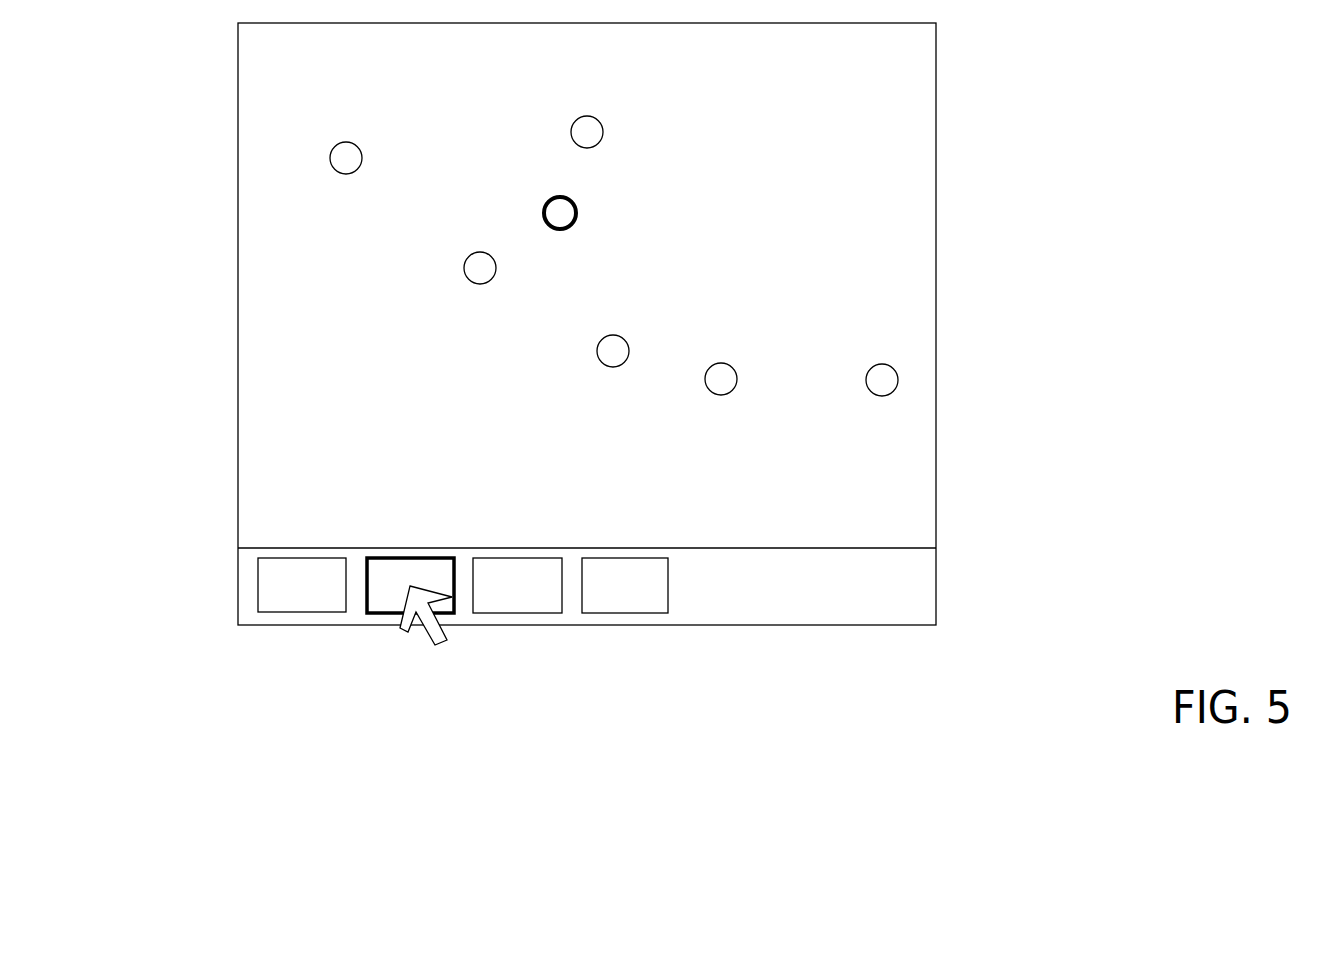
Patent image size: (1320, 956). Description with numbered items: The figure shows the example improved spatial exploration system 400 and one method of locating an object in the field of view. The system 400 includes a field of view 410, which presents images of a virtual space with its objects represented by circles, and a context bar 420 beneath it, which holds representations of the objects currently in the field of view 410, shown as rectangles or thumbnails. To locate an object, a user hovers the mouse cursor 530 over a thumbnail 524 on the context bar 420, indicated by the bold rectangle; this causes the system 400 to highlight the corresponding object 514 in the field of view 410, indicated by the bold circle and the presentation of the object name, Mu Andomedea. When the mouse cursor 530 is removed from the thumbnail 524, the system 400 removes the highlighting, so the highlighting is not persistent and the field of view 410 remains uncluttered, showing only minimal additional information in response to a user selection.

The improved spatial exploration system 400 is at (770, 691).
The field of view 410 is at (942, 553).
The context bar 420 is at (228, 629).
The object 514 is at (556, 197).
The thumbnail 524 is at (366, 614).
The mouse cursor 530 is at (434, 612).